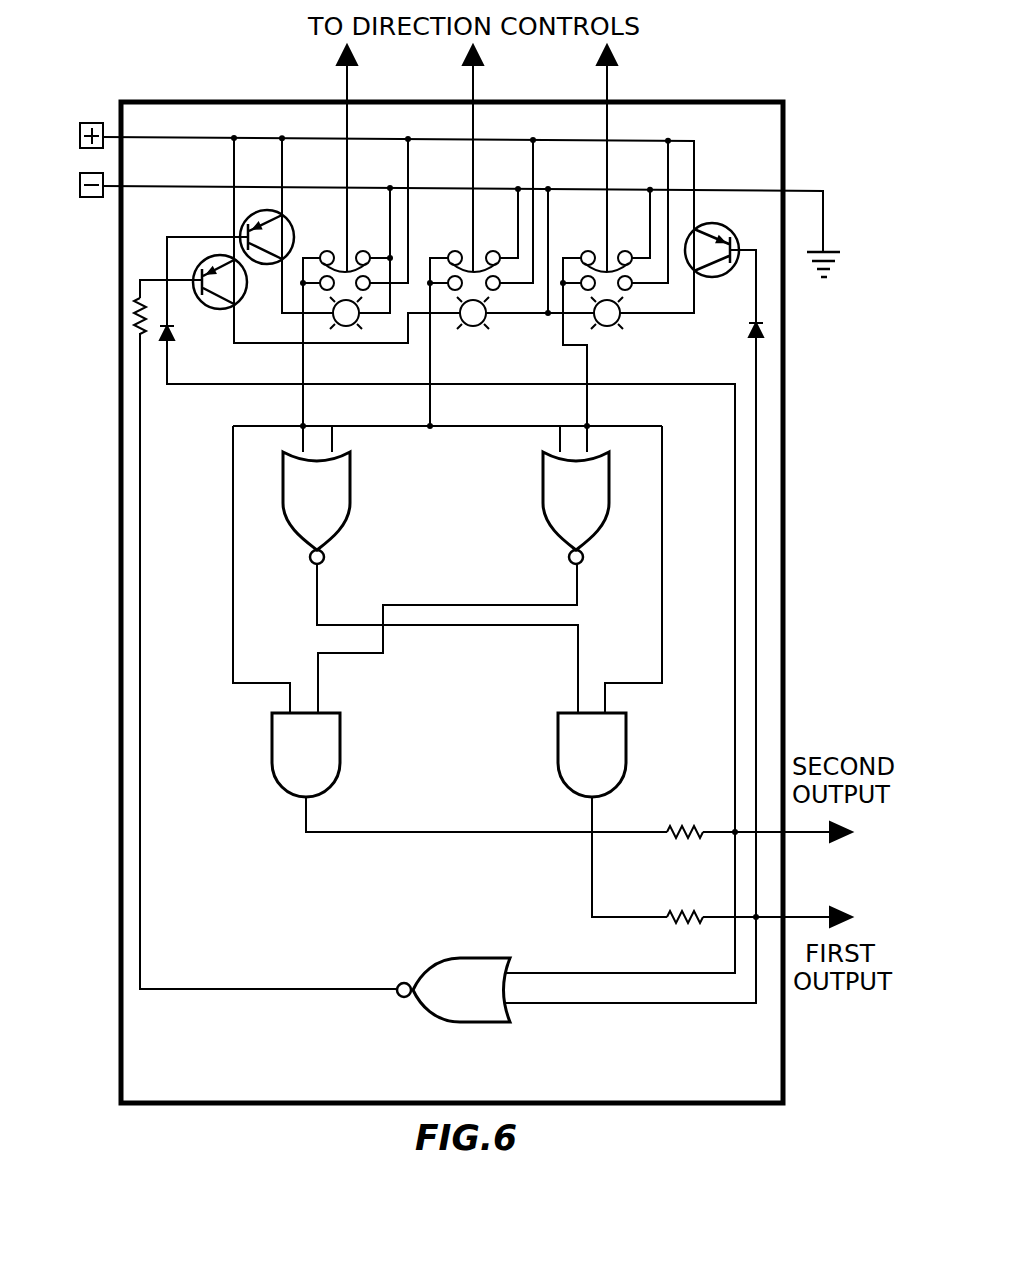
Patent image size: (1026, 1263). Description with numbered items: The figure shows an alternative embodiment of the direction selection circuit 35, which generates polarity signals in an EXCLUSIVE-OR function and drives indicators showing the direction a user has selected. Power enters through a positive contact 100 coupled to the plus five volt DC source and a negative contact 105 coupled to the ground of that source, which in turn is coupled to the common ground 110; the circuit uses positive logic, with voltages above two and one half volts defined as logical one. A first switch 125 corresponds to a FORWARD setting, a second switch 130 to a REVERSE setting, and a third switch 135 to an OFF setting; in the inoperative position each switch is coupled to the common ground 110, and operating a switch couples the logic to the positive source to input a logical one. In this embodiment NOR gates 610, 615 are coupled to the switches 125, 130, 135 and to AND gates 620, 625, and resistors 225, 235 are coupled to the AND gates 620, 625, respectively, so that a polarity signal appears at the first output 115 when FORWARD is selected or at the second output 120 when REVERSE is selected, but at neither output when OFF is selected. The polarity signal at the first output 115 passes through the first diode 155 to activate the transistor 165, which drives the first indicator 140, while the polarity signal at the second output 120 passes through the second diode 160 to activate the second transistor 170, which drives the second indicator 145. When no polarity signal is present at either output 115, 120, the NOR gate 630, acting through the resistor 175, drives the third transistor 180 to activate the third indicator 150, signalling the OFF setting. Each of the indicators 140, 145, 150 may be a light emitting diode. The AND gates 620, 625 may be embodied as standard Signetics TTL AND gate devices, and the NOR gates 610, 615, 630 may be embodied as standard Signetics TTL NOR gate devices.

The direction selection circuit 35 is at (790, 1073).
The positive contact 100 is at (93, 123).
The negative contact 105 is at (93, 197).
The common ground 110 is at (823, 284).
The first output 115 is at (843, 905).
The second output 120 is at (843, 846).
The first switch 125 is at (615, 252).
The second switch 130 is at (357, 250).
The third switch 135 is at (482, 252).
The first indicator 140 is at (612, 327).
The second indicator 145 is at (346, 327).
The third indicator 150 is at (481, 327).
The first diode 155 is at (761, 340).
The second diode 160 is at (162, 340).
The transistor 165 is at (725, 226).
The second transistor 170 is at (290, 217).
The resistor 175 is at (132, 318).
The third transistor 180 is at (201, 260).
The resistor 225 is at (681, 912).
The resistor 235 is at (681, 827).
The NOR gate 610 is at (303, 543).
The NOR gate 615 is at (562, 543).
The AND gate 620 is at (291, 797).
The AND gate 625 is at (563, 782).
The NOR gate 630 is at (418, 972).